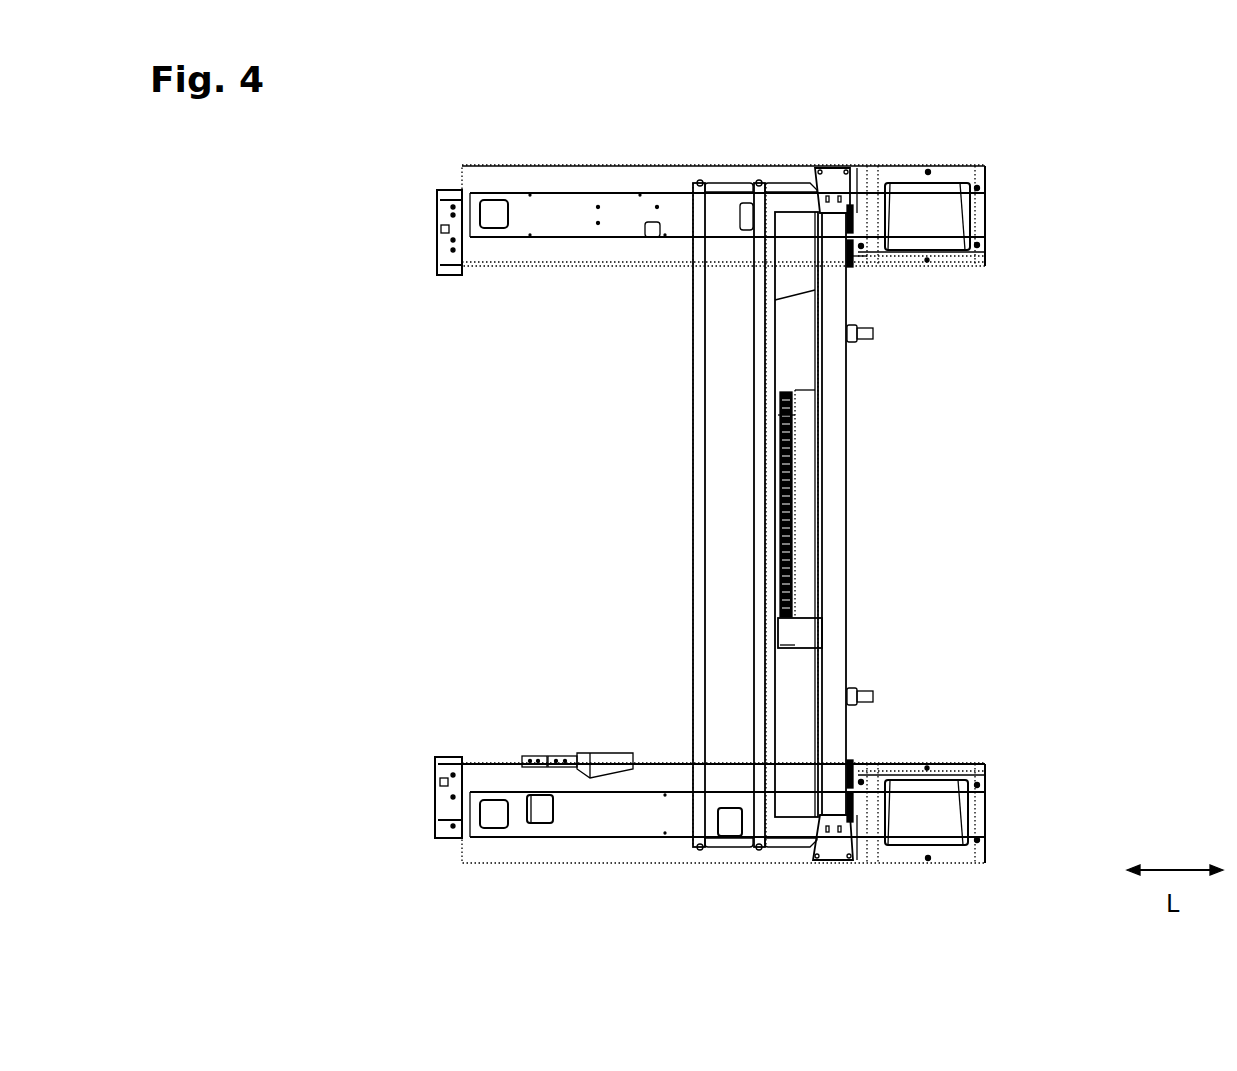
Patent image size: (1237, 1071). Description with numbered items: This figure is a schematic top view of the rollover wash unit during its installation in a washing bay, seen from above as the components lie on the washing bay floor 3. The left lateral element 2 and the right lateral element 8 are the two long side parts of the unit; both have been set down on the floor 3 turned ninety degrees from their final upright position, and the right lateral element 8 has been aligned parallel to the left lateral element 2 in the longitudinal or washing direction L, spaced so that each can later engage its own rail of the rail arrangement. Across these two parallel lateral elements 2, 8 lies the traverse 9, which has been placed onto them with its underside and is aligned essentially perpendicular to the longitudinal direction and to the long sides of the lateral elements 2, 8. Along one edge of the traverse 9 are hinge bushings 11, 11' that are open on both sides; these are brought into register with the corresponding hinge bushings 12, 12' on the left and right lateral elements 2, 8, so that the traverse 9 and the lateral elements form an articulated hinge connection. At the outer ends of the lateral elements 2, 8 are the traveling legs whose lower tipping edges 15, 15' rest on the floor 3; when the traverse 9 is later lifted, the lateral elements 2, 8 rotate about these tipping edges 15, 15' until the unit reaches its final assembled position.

The left lateral element 2 is at (700, 776).
The washing bay floor 3 is at (1229, 562).
The right lateral element 8 is at (700, 253).
The traverse 9 is at (711, 515).
The hinge bushing 11 is at (913, 747).
The hinge bushing 11' is at (913, 279).
The hinge bushing 12 is at (894, 860).
The hinge bushing 12' is at (900, 166).
The lower tipping edge 15 is at (984, 808).
The lower tipping edge 15' is at (987, 216).